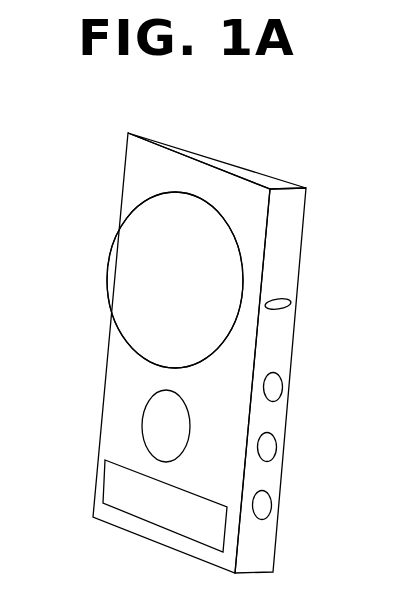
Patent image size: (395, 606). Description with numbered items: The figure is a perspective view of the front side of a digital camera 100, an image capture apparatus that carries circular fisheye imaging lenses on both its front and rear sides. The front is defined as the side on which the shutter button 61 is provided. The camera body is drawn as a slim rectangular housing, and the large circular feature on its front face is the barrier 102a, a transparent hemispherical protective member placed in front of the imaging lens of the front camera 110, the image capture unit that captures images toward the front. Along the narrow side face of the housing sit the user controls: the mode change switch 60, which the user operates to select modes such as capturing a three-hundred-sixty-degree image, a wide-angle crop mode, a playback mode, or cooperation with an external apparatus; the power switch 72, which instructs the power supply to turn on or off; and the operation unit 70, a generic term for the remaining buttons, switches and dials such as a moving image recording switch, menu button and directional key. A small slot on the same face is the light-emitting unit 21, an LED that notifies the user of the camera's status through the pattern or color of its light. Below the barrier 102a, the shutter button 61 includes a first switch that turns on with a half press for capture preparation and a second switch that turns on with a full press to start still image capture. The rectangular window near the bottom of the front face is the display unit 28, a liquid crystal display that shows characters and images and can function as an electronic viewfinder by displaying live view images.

The digital camera 100 is at (205, 153).
The barrier 102a is at (122, 292).
The front camera 110 is at (213, 272).
The light-emitting unit 21 is at (283, 302).
The mode change switch 60 is at (274, 388).
The power switch 72 is at (268, 447).
The operation unit 70 is at (263, 505).
The shutter button 61 is at (152, 469).
The display unit 28 is at (130, 498).